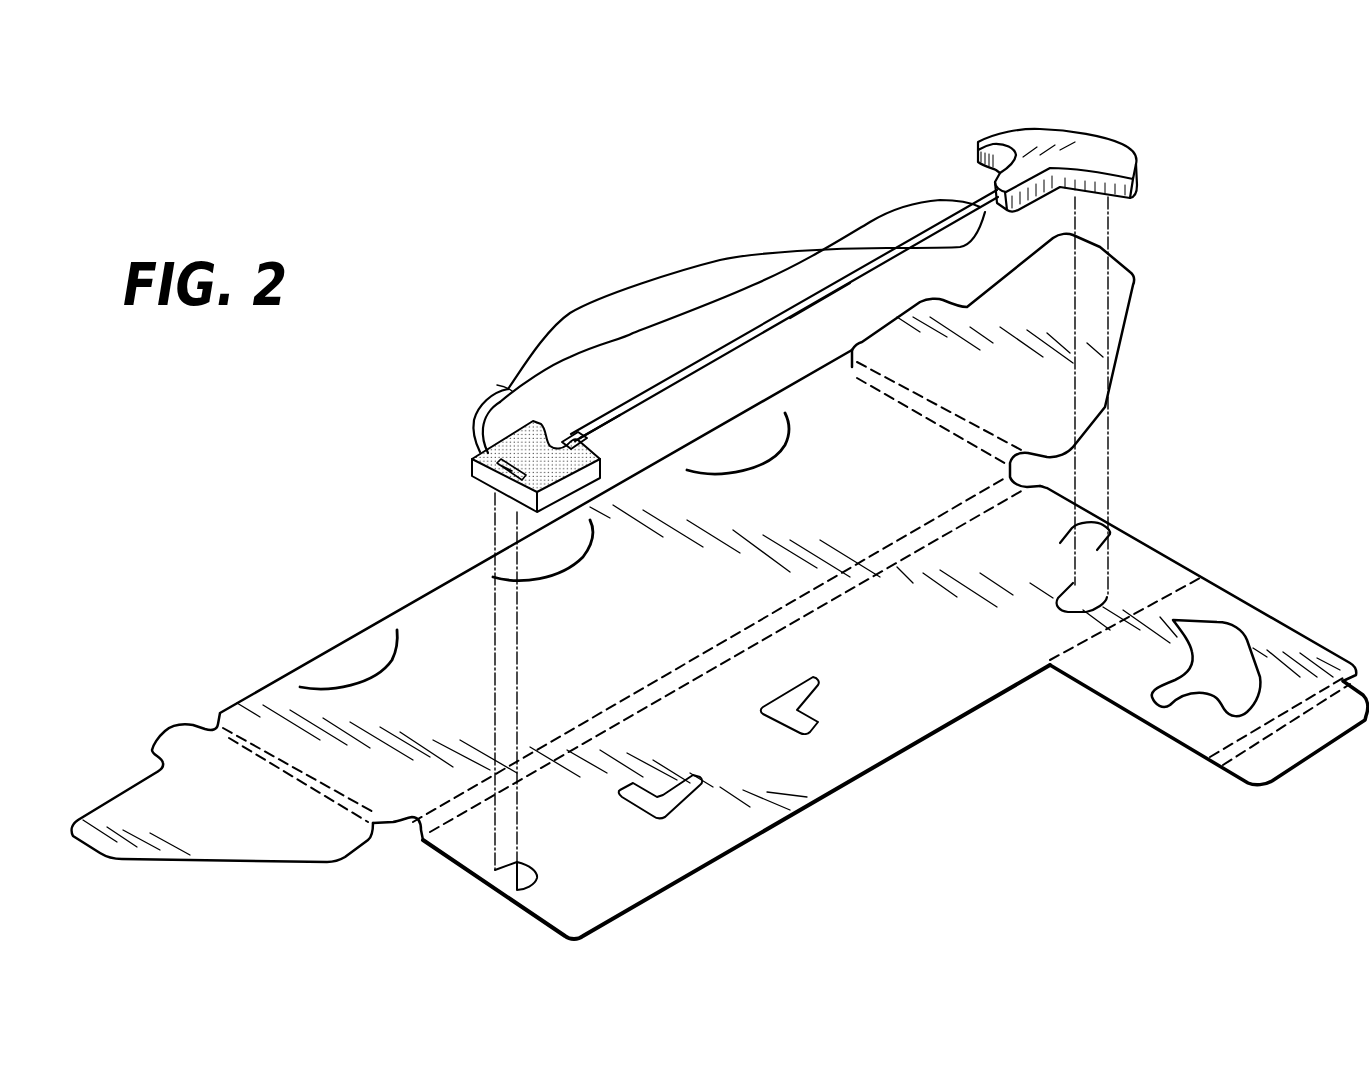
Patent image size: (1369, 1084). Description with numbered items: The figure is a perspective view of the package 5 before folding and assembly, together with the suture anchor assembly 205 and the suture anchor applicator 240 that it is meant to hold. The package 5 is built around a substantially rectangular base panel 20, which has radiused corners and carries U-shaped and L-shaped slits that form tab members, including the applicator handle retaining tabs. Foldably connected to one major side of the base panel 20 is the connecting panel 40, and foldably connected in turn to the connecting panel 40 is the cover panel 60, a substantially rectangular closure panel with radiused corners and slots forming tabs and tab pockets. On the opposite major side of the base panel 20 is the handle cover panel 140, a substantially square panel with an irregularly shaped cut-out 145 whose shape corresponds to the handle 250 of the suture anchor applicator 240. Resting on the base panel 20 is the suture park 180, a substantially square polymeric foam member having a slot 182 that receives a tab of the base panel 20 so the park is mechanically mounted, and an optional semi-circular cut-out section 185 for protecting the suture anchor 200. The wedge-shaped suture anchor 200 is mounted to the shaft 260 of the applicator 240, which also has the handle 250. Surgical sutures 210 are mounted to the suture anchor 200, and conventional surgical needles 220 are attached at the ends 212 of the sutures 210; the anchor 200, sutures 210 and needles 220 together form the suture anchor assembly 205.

The package 5 is at (1232, 286).
The base panel 20 is at (890, 735).
The connecting panel 40 is at (413, 822).
The cover panel 60 is at (427, 620).
The handle cover panel 140 is at (1217, 598).
The cut-out 145 is at (1225, 655).
The suture park 180 is at (470, 463).
The slot 182 is at (507, 470).
The semi-circular cut-out section 185 is at (557, 433).
The suture anchor 200 is at (567, 430).
The suture anchor assembly 205 is at (538, 271).
The surgical sutures 210 is at (670, 323).
The ends 212 is at (503, 400).
The surgical needles 220 is at (473, 432).
The suture anchor applicator 240 is at (746, 370).
The handle 250 is at (1100, 154).
The shaft 260 is at (817, 313).